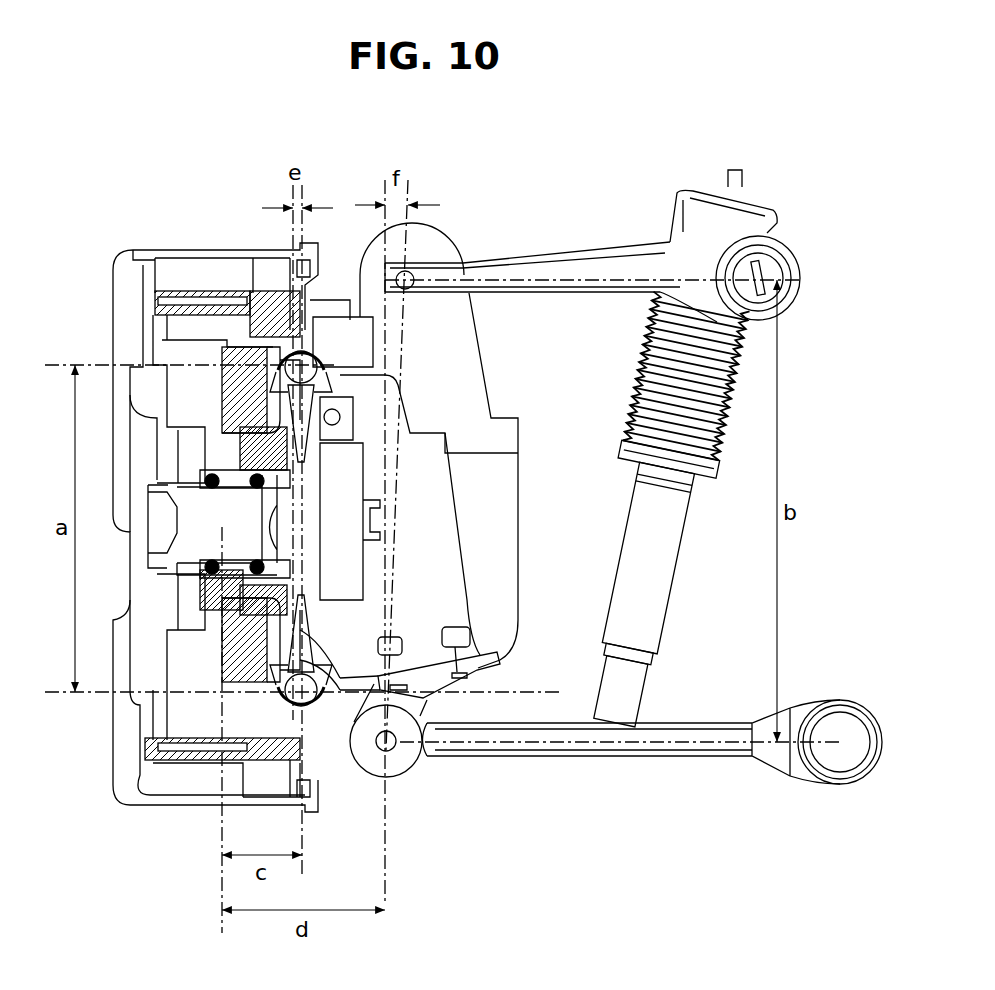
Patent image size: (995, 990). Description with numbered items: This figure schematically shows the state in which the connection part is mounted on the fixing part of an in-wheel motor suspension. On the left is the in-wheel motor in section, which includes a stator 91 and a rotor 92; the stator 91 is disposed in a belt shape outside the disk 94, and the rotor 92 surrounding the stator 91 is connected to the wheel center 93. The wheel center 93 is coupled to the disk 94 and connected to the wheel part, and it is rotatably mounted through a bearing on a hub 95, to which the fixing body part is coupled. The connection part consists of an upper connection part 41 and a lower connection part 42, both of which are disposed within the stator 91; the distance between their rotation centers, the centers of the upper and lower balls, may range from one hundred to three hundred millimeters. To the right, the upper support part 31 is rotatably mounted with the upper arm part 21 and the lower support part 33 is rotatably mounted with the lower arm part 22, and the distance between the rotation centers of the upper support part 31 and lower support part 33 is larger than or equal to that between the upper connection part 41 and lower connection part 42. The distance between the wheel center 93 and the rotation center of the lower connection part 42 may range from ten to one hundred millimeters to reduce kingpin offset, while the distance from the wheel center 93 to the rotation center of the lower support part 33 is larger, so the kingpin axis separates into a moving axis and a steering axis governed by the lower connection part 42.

The upper arm part 21 is at (510, 252).
The lower arm part 22 is at (518, 757).
The upper support part 31 is at (450, 233).
The lower support part 33 is at (402, 757).
The upper connection part 41 is at (267, 350).
The lower connection part 42 is at (270, 712).
The stator 91 is at (155, 707).
The rotor 92 is at (137, 797).
The wheel center 93 is at (175, 492).
The disk 94 is at (175, 442).
The hub 95 is at (213, 412).